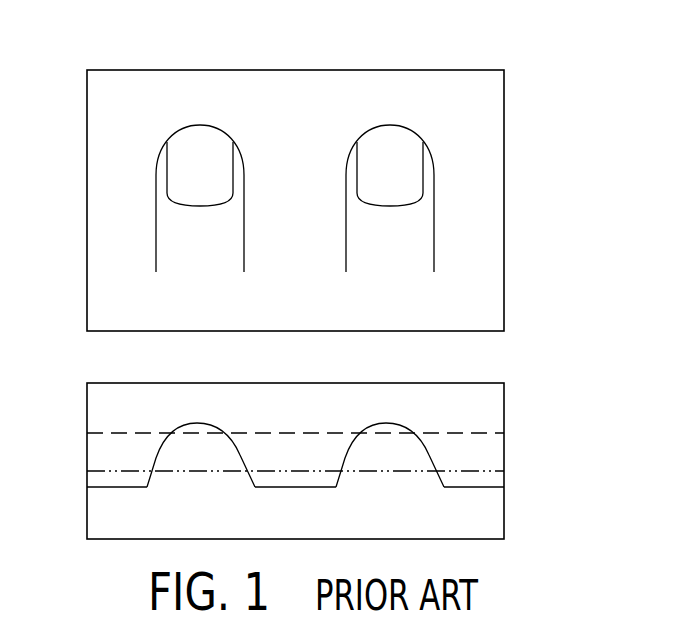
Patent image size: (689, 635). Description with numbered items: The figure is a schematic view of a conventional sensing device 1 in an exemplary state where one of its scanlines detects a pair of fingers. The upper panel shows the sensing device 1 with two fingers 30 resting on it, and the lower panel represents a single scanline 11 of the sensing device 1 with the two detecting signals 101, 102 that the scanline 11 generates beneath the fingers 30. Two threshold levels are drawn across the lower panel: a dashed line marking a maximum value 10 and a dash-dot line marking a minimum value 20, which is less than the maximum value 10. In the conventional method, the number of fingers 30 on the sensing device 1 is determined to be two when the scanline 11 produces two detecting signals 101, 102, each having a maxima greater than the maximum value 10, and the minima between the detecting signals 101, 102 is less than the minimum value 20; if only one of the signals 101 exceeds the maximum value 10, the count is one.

The sensing device 1 is at (274, 70).
The fingers 30 is at (202, 137).
The maximum value 10 is at (478, 433).
The minimum value 20 is at (480, 471).
The scanline 11 is at (475, 487).
The detecting signal 101 is at (217, 423).
The detecting signal 102 is at (394, 423).